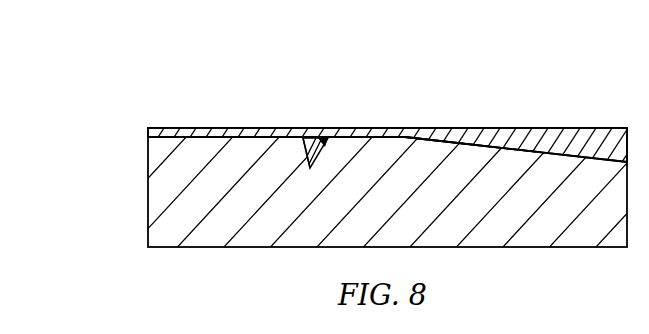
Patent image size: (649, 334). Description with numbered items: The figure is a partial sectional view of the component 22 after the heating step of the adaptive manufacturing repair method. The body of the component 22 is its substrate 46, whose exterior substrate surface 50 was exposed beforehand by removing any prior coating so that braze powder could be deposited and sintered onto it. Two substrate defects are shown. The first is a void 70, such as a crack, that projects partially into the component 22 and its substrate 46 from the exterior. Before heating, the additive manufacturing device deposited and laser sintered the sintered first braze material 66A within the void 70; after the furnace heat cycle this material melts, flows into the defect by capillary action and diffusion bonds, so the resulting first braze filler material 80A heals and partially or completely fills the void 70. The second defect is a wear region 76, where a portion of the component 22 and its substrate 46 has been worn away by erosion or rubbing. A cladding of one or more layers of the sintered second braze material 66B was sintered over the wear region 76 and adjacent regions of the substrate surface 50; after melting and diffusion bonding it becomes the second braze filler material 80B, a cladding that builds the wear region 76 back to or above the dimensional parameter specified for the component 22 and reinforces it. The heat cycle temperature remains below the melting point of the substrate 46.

The component 22 is at (116, 112).
The substrate 46 is at (148, 202).
The substrate surface 50 is at (227, 132).
The sintered first braze material 66A is at (313, 136).
The first braze filler material 80A is at (313, 136).
The sintered second braze material 66B is at (573, 145).
The second braze filler material 80B is at (573, 145).
The void 70 is at (302, 160).
The wear region 76 is at (521, 158).